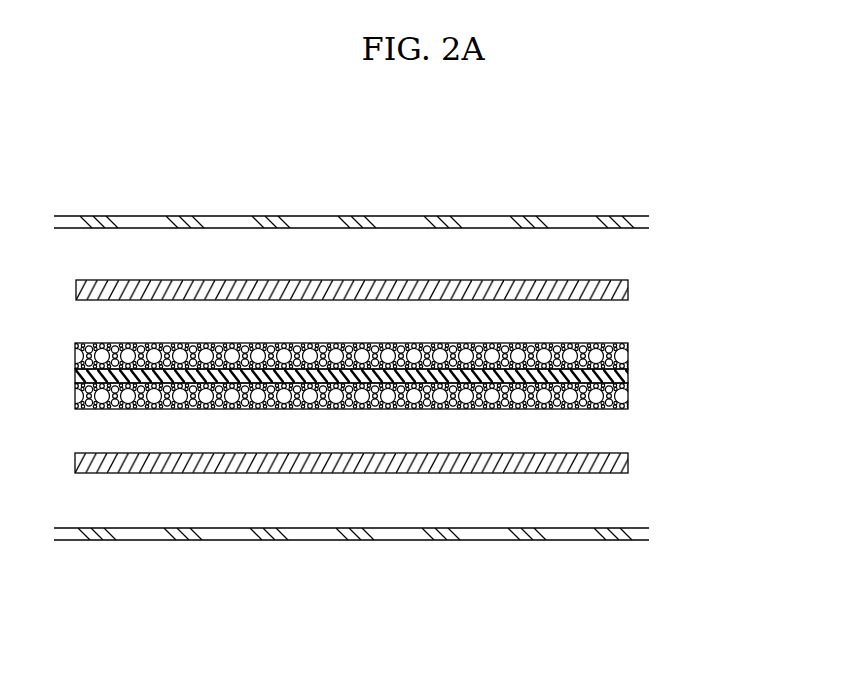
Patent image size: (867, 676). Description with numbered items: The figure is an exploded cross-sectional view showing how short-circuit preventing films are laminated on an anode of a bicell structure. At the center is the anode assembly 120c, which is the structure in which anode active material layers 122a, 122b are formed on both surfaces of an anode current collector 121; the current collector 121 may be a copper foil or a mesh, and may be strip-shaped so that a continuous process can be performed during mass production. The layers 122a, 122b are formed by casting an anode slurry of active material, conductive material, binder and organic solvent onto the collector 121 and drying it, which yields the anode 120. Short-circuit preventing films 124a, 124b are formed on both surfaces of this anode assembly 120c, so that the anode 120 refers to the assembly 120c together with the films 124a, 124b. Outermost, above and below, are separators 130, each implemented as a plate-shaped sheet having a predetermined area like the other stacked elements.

The anode 120 is at (710, 238).
The separator 130 is at (402, 216).
The short-circuit preventing film 124a is at (629, 288).
The short-circuit preventing film 124b is at (629, 463).
The anode assembly 120c is at (752, 345).
The anode active material layer 122a is at (629, 350).
The anode current collector 121 is at (629, 376).
The anode active material layer 122b is at (629, 402).